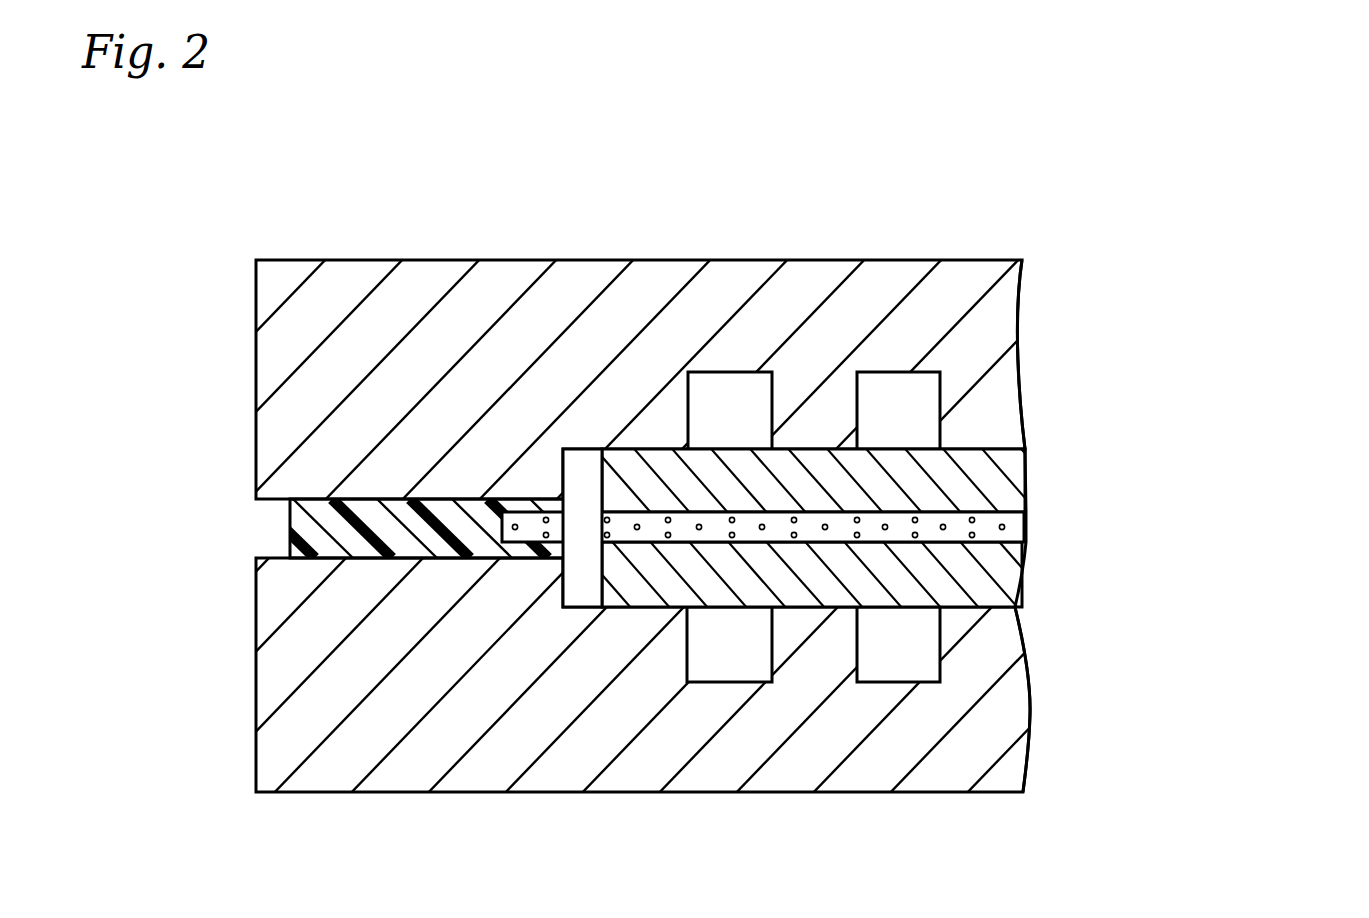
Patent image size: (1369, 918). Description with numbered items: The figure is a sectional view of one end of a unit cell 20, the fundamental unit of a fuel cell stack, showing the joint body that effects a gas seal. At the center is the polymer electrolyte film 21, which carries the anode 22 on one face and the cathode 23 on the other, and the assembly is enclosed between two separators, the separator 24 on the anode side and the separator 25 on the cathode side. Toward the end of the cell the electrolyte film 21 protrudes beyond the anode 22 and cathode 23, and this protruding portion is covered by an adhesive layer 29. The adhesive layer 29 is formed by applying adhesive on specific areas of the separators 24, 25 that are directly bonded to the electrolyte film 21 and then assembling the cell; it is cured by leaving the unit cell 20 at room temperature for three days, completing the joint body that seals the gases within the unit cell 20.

The unit cell 20 is at (673, 491).
The electrolyte film 21 is at (1026, 524).
The anode 22 is at (1017, 582).
The cathode 23 is at (1025, 470).
The separator 24 is at (1028, 704).
The separator 25 is at (1018, 356).
The adhesive layer 29 is at (300, 525).